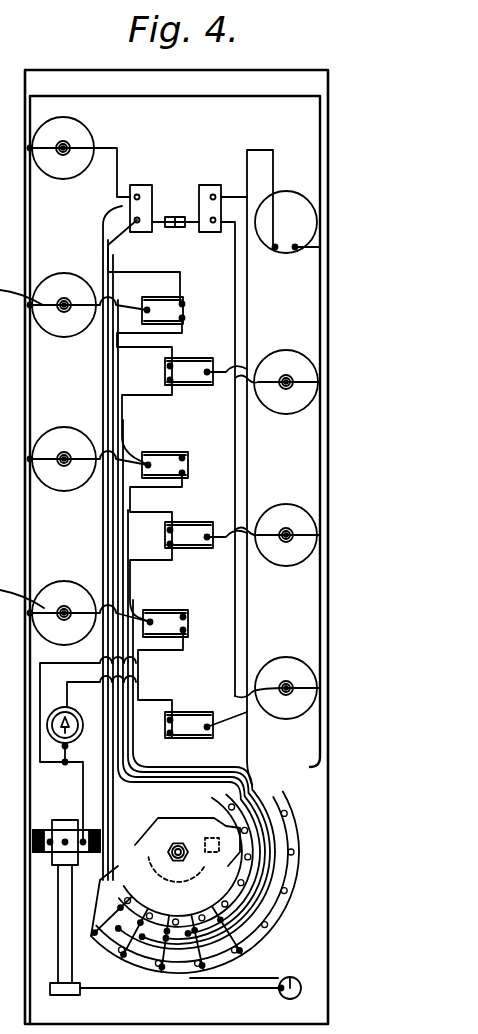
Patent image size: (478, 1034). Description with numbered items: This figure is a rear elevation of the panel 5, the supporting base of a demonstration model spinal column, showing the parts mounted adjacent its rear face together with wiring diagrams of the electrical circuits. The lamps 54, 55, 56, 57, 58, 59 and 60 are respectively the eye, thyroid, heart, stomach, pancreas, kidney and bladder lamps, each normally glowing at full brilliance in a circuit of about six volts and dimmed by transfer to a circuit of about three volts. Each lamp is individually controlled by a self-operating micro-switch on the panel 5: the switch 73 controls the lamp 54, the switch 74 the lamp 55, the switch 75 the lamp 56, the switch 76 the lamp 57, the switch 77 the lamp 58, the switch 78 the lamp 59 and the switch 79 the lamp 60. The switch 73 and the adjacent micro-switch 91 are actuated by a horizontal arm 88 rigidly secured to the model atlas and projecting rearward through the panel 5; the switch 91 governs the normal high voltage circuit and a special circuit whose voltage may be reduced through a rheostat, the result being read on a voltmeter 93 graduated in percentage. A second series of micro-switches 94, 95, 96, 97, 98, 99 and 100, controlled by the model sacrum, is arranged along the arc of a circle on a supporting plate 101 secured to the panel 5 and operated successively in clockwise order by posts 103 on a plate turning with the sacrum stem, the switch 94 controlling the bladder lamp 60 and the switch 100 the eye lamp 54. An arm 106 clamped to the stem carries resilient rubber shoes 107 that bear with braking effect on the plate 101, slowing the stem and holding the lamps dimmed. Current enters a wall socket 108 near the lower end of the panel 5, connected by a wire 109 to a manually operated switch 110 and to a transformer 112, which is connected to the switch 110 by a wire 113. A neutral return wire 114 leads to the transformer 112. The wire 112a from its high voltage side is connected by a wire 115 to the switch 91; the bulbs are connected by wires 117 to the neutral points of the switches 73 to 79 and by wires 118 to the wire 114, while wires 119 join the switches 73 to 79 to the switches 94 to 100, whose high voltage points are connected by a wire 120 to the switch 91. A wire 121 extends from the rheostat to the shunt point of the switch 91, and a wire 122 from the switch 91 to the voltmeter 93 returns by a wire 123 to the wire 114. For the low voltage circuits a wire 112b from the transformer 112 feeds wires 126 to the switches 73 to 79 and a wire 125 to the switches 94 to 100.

The panel 5 is at (302, 433).
The eye lamp 54 is at (83, 137).
The thyroid lamp 55 is at (65, 283).
The heart lamp 56 is at (286, 357).
The stomach lamp 57 is at (66, 433).
The pancreas lamp 58 is at (286, 508).
The kidney lamp 59 is at (67, 585).
The bladder lamp 60 is at (286, 662).
The micro-switch 73 is at (142, 190).
The micro-switch 74 is at (188, 305).
The micro-switch 75 is at (194, 368).
The micro-switch 76 is at (190, 458).
The micro-switch 77 is at (204, 528).
The micro-switch 78 is at (187, 617).
The micro-switch 79 is at (228, 735).
The horizontal arm 88 is at (175, 215).
The micro-switch 91 is at (213, 196).
The voltmeter 93 is at (290, 205).
The micro-switch 94 is at (290, 812).
The micro-switch 95 is at (292, 858).
The micro-switch 96 is at (280, 910).
The micro-switch 97 is at (256, 945).
The micro-switch 98 is at (190, 967).
The micro-switch 99 is at (147, 963).
The micro-switch 100 is at (110, 947).
The supporting plate 101 is at (258, 838).
The posts 103 is at (144, 950).
The arm 106 is at (246, 828).
The shoes 107 is at (156, 948).
The wall socket 108 is at (300, 984).
The wire 109 is at (258, 986).
The manually operated switch 110 is at (50, 990).
The transformer 112 is at (50, 847).
The wire 112a is at (83, 803).
The wire 112b is at (90, 852).
The wire 113 is at (55, 927).
The return wire 114 is at (318, 492).
The wire 115 is at (236, 457).
The wires 117 is at (130, 306).
The wires 118 is at (22, 592).
The wires 119 is at (125, 788).
The wire 120 is at (250, 285).
The wire 121 is at (182, 305).
The wire 122 is at (275, 220).
The wire 123 is at (318, 130).
The wire 125 is at (21, 254).
The wires 126 is at (172, 270).